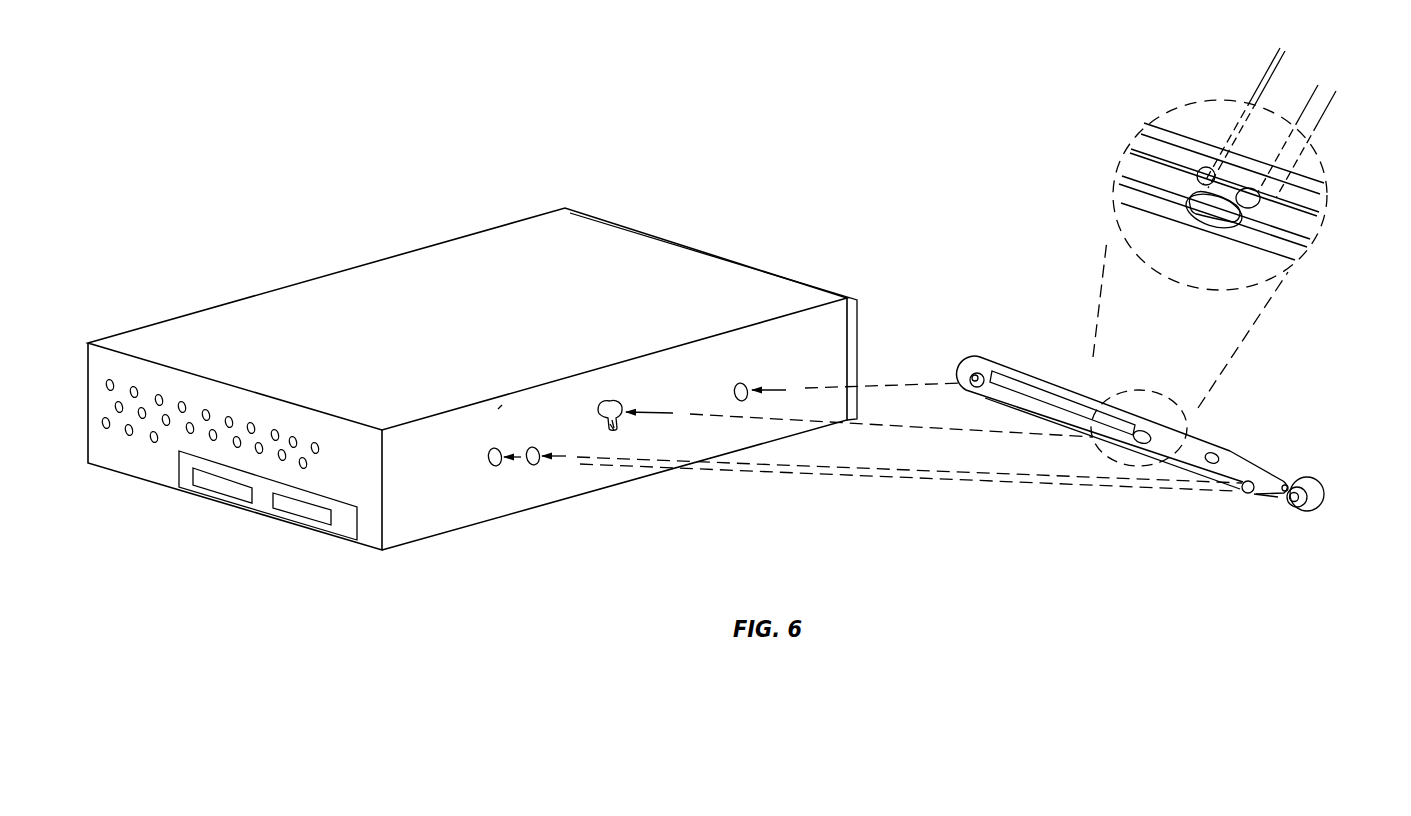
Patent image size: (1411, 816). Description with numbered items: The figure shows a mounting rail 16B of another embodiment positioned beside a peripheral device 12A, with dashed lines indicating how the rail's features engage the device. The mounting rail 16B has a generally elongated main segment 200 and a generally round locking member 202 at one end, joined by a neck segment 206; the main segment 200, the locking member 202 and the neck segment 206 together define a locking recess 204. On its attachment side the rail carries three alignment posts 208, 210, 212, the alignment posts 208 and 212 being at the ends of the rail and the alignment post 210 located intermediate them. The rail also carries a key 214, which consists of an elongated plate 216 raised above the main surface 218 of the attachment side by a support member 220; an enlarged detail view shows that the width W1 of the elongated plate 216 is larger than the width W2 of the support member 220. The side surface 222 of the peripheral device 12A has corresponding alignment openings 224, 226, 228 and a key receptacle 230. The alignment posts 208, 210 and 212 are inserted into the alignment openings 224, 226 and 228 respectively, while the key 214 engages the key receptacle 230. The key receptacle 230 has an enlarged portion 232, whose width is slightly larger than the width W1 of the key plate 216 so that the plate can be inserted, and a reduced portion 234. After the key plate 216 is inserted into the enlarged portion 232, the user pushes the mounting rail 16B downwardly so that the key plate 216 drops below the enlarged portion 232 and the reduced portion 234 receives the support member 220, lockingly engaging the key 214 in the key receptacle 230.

The peripheral device 12A is at (736, 229).
The mounting rail 16B is at (1141, 382).
The main segment 200 is at (1100, 419).
The locking member 202 is at (1332, 485).
The locking recess 204 is at (1255, 455).
The neck segment 206 is at (1232, 524).
The alignment post 208 is at (940, 398).
The alignment post 210 is at (1191, 508).
The alignment post 212 is at (1246, 538).
The key 214 is at (1124, 453).
The elongated plate 216 is at (1174, 254).
The main surface 218 is at (1256, 191).
The support member 220 is at (1152, 158).
The side surface 222 is at (540, 375).
The alignment opening 224 is at (849, 324).
The alignment opening 226 is at (856, 511).
The alignment opening 228 is at (834, 506).
The key receptacle 230 is at (585, 484).
The enlarged portion 232 is at (845, 375).
The reduced portion 234 is at (675, 462).
The width of elongated plate W1 is at (1274, 58).
The width of support member W2 is at (1270, 114).